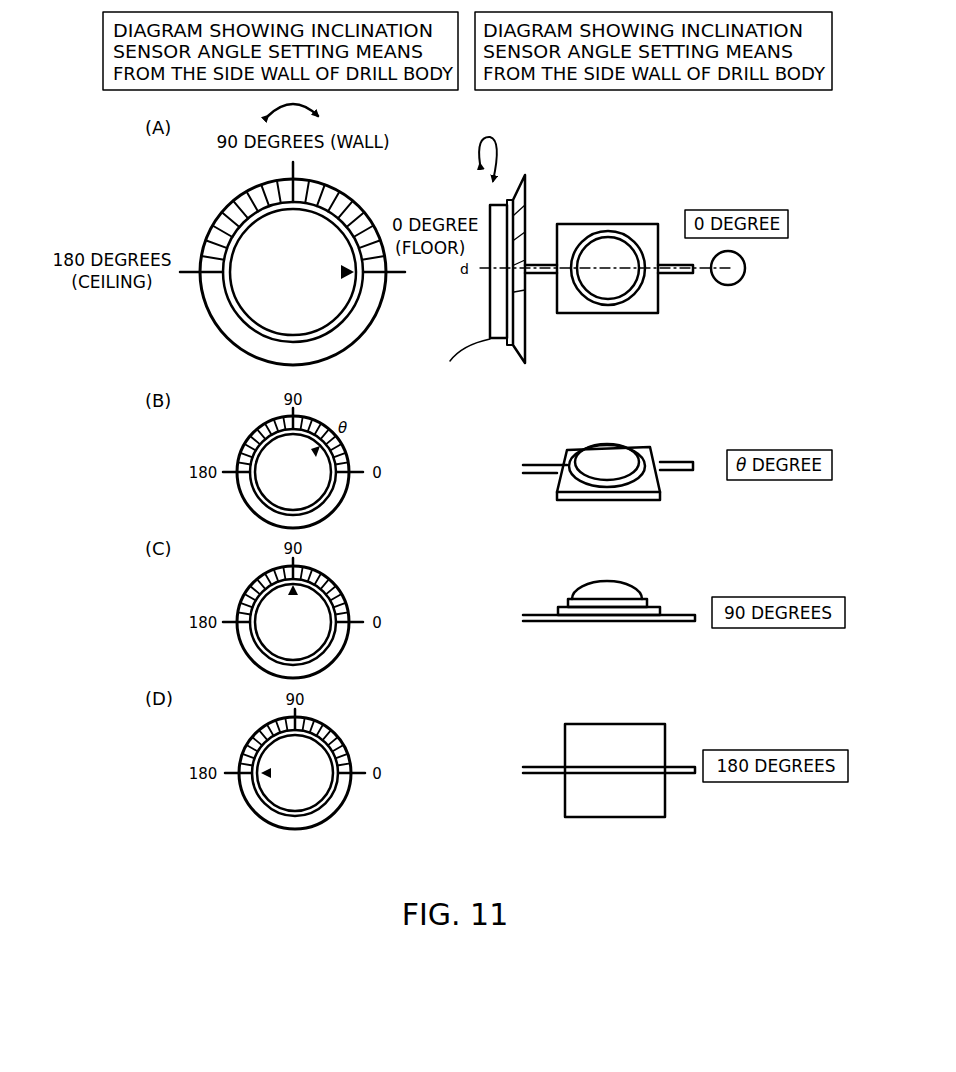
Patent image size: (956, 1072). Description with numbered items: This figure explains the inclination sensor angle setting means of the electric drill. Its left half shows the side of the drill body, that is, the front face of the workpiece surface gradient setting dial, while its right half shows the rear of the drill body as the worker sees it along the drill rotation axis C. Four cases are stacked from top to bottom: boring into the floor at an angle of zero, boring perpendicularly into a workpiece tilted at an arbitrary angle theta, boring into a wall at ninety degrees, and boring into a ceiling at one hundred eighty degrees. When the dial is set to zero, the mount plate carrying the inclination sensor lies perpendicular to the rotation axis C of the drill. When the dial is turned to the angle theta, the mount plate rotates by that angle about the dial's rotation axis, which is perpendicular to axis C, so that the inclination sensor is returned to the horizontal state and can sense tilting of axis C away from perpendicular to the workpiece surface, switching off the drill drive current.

The rotation axis of the drill C is at (728, 270).